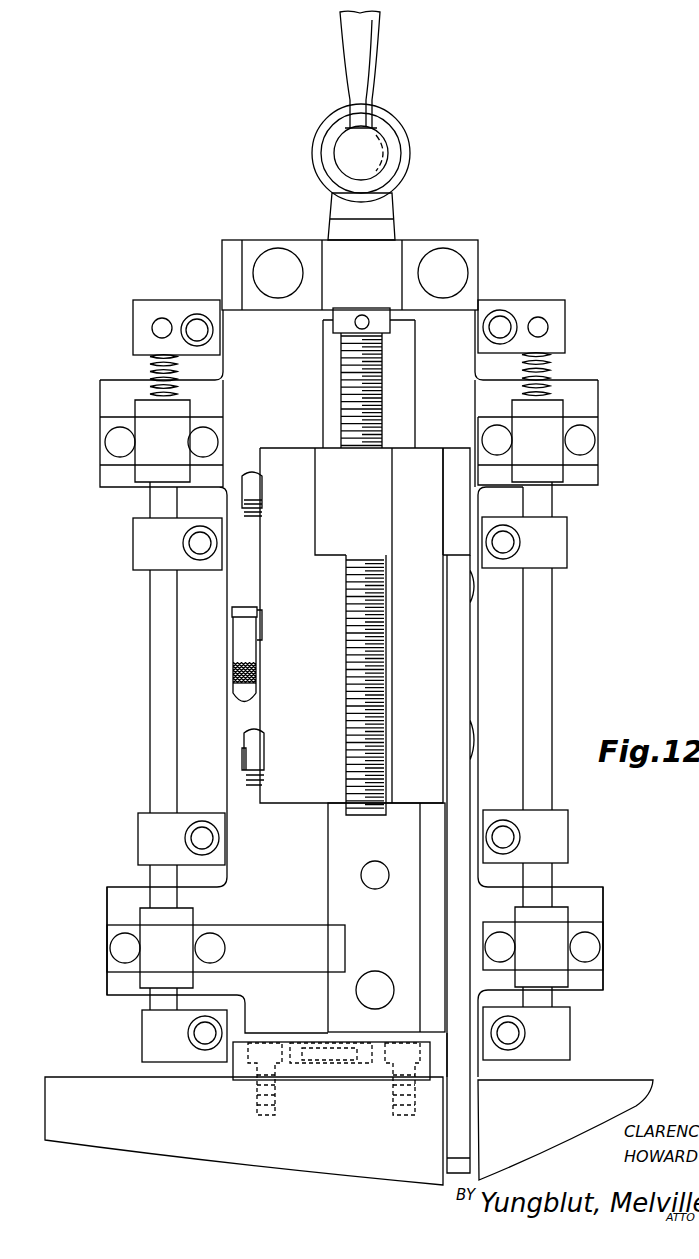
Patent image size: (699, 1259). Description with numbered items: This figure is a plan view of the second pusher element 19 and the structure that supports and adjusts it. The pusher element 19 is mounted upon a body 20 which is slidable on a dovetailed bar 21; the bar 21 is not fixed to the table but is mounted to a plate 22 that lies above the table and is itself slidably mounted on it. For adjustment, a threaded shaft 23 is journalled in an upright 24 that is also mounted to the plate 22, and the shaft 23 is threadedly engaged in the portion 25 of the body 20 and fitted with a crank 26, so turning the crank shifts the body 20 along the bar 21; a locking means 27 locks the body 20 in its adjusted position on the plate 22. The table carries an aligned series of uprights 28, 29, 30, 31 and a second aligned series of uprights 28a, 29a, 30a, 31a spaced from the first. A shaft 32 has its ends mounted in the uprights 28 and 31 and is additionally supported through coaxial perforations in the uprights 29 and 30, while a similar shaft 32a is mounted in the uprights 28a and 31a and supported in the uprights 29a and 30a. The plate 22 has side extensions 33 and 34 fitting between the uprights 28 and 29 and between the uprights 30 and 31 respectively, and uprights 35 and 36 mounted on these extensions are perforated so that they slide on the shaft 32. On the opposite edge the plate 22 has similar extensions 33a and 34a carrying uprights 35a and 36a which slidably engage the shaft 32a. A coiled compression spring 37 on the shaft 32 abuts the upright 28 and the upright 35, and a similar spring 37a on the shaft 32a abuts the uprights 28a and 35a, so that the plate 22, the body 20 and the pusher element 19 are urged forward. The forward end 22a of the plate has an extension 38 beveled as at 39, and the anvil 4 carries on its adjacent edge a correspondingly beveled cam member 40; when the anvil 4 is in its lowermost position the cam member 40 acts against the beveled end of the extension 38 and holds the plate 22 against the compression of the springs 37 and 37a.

The anvil 4 is at (362, 1163).
The second pusher element 19 is at (457, 655).
The body 20 is at (317, 648).
The dovetailed bar 21 is at (394, 930).
The plate 22 is at (285, 877).
The forward end of the plate 22a is at (275, 1033).
The threaded shaft 23 is at (345, 722).
The upright 24 is at (397, 255).
The portion of the body 25 is at (366, 502).
The crank 26 is at (392, 155).
The locking means 27 is at (240, 643).
The upright 28 is at (143, 313).
The upright 28a is at (558, 322).
The upright 29 is at (140, 533).
The upright 29a is at (556, 546).
The upright 30 is at (145, 840).
The upright 30a is at (558, 838).
The upright 31 is at (145, 1040).
The upright 31a is at (563, 1035).
The shaft 32 is at (155, 650).
The shaft 32a is at (548, 687).
The side extension 33 is at (115, 399).
The side extension 33a is at (590, 402).
The side extension 34 is at (112, 903).
The side extension 34a is at (593, 910).
The upright 35 is at (125, 455).
The upright 35a is at (590, 440).
The upright 36 is at (110, 940).
The upright 36a is at (600, 965).
The coiled compression spring 37 is at (145, 370).
The coiled compression spring 37a is at (553, 368).
The extension 38 is at (318, 1033).
The bevel 39 is at (332, 1055).
The cam member 40 is at (245, 1078).